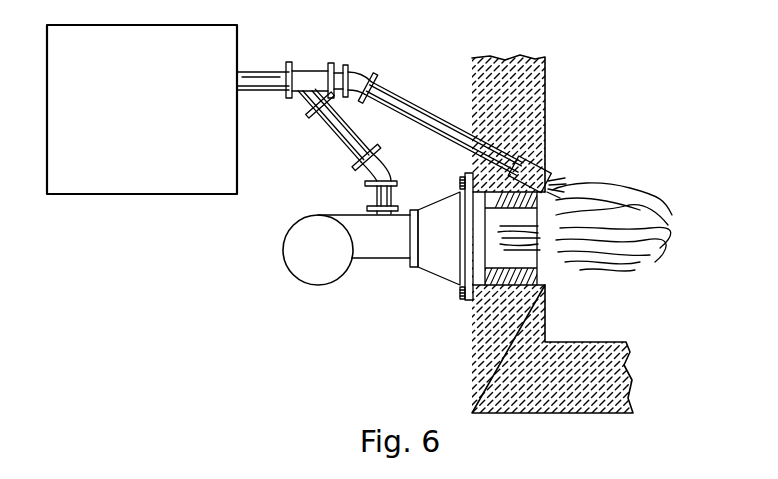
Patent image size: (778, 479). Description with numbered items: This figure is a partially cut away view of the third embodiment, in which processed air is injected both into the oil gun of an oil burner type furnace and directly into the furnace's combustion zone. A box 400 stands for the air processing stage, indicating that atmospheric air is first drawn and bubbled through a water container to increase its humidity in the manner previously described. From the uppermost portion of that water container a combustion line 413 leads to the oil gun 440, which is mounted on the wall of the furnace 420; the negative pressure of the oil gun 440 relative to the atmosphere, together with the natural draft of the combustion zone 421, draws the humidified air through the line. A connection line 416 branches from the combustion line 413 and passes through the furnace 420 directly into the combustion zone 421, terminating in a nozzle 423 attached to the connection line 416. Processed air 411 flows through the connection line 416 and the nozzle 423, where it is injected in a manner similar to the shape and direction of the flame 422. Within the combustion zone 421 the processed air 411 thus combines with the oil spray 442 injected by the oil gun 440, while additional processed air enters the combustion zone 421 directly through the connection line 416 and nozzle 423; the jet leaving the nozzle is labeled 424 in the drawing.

The box 400 is at (142, 109).
The processed air 411 is at (422, 117).
The combustion line 413 is at (343, 153).
The connection line 416 is at (458, 142).
The furnace 420 is at (545, 73).
The combustion zone 421 is at (606, 136).
The flame 422 is at (636, 268).
The nozzle 423 is at (548, 128).
The nozzle spray jet 424 is at (562, 186).
The oil gun 440 is at (333, 228).
The oil spray 442 is at (530, 246).